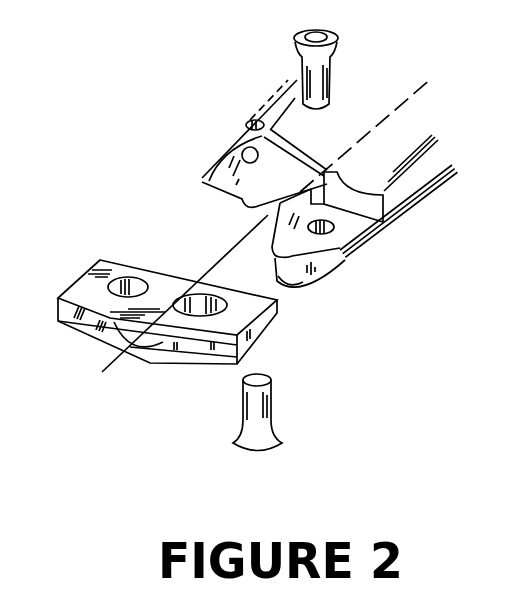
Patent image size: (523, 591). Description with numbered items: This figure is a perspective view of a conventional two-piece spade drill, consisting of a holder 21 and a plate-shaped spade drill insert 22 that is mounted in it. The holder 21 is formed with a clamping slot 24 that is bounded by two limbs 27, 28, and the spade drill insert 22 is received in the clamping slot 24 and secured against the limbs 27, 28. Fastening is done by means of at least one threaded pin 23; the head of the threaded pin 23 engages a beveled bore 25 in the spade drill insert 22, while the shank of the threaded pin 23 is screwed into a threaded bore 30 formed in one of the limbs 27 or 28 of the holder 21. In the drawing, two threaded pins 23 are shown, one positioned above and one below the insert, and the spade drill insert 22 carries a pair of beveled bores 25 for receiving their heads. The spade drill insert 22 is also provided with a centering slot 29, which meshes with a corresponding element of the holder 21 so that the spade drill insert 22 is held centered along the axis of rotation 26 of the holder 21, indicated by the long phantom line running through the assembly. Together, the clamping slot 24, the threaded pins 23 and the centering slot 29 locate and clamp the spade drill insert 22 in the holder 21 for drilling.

The holder 21 is at (420, 211).
The spade drill insert 22 is at (80, 256).
The threaded pin 23 is at (343, 72).
The clamping slot 24 is at (260, 214).
The beveled bore 25 is at (128, 283).
The axis of rotation 26 is at (112, 372).
The limb 27 is at (418, 212).
The limb 28 is at (214, 182).
The centering slot 29 is at (184, 283).
The threaded bore 30 is at (253, 122).